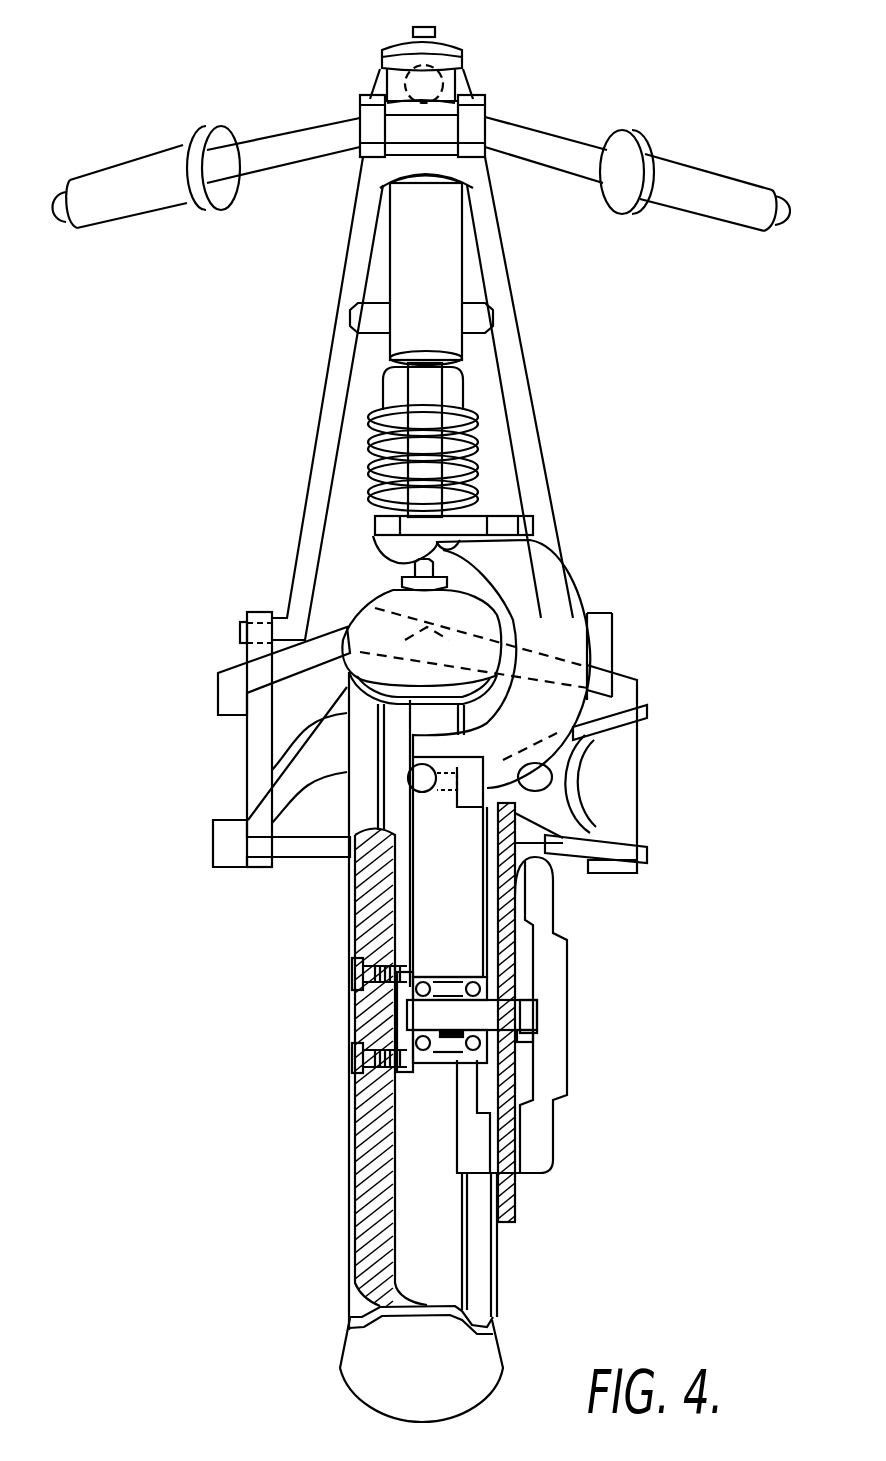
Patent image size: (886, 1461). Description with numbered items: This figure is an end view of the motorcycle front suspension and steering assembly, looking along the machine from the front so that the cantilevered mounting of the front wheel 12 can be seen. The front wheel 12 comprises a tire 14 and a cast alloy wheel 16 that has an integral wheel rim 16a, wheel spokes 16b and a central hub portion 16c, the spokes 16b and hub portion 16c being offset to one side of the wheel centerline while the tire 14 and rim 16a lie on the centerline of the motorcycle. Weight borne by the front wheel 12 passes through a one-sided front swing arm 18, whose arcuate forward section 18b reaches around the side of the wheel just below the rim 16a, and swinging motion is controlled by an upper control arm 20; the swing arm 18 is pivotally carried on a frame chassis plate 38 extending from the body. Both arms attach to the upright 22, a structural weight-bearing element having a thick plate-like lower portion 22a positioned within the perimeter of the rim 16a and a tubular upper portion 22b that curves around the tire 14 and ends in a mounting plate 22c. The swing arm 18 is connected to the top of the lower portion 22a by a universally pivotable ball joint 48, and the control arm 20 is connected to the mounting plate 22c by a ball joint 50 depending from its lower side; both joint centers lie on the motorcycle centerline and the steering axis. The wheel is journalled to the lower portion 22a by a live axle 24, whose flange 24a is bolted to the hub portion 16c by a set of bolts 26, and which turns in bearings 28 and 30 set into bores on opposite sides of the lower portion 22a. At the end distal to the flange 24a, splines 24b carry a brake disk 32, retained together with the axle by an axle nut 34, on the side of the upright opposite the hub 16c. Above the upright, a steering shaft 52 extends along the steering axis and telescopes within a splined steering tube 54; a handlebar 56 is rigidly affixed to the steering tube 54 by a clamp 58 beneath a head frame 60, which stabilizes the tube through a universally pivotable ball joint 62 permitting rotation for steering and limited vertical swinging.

The front wheel 12 is at (510, 1323).
The tire 14 is at (352, 1358).
The cast alloy wheel 16 is at (334, 1091).
The wheel rim 16a is at (367, 1307).
The wheel spokes 16b is at (370, 1200).
The central hub portion 16c is at (373, 1034).
The front swing arm 18 is at (655, 757).
The arcuate forward section 18b is at (593, 795).
The upper control arm 20 is at (608, 677).
The upright 22 is at (580, 582).
The lower portion 22a is at (470, 898).
The upper portion 22b is at (577, 612).
The mounting plate 22c is at (492, 518).
The live axle 24 is at (525, 1022).
The flange 24a is at (370, 932).
The splines 24b is at (520, 995).
The bolts 26 is at (352, 973).
The bearing 28 is at (400, 1067).
The bearing 30 is at (473, 1041).
The brake disk 32 is at (513, 1193).
The axle nut 34 is at (527, 1032).
The frame chassis plate 38 is at (247, 655).
The ball joint 48 is at (400, 795).
The ball joint 50 is at (402, 578).
The steering shaft 52 is at (437, 400).
The steering tube 54 is at (402, 270).
The handlebar 56 is at (578, 147).
The clamp 58 is at (470, 123).
The head frame 60 is at (465, 50).
The ball joint 62 is at (416, 80).